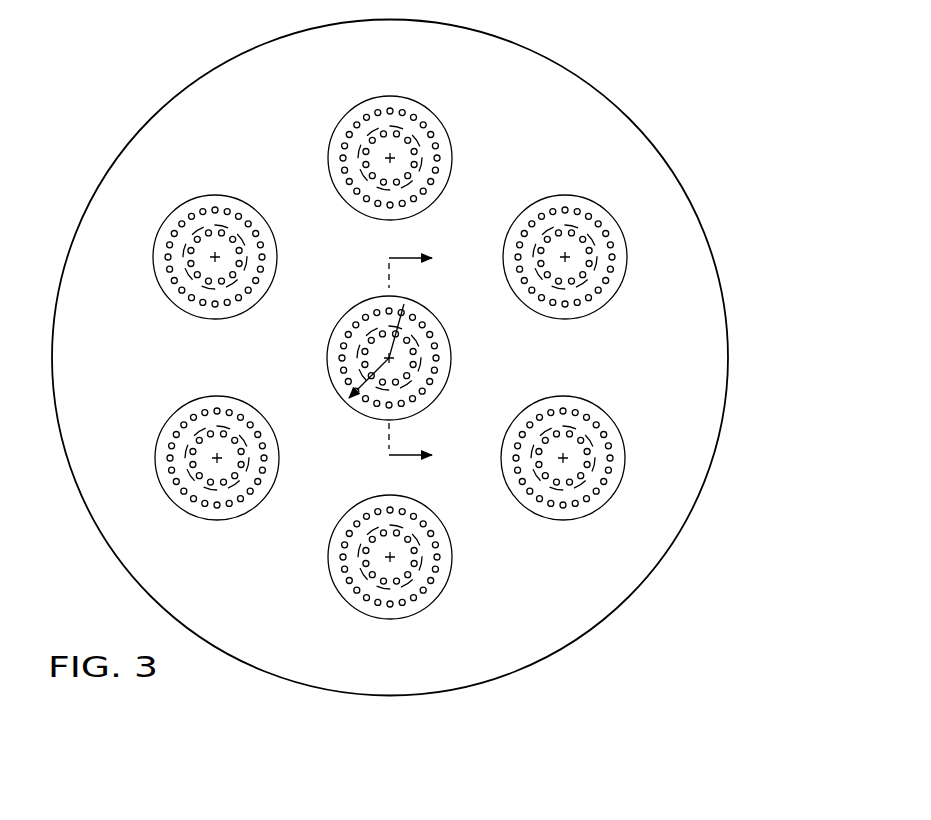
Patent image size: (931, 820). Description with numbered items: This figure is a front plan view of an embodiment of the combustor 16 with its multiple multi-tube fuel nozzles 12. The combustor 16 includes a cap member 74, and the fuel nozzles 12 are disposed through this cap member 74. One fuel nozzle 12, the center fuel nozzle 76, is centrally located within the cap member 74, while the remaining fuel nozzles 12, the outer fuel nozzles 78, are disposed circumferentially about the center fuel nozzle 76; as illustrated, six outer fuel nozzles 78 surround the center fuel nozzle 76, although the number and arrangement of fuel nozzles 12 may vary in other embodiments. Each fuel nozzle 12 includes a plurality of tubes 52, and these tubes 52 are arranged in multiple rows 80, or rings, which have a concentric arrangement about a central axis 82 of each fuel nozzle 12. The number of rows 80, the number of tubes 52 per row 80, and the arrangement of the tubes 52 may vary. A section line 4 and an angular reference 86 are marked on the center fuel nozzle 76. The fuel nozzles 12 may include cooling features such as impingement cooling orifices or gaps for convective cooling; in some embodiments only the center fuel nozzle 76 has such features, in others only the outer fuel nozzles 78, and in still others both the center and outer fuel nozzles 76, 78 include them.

The combustor 16 is at (106, 66).
The cap member 74 is at (628, 118).
The fuel nozzle 12 is at (344, 100).
The outer fuel nozzle 78 is at (426, 106).
The center fuel nozzle 76 is at (451, 356).
The rows 80 is at (432, 407).
The central axis 82 is at (404, 304).
The tubes 52 is at (450, 329).
The angle reference line 86 is at (362, 380).
The section line 4- 4 is at (417, 357).